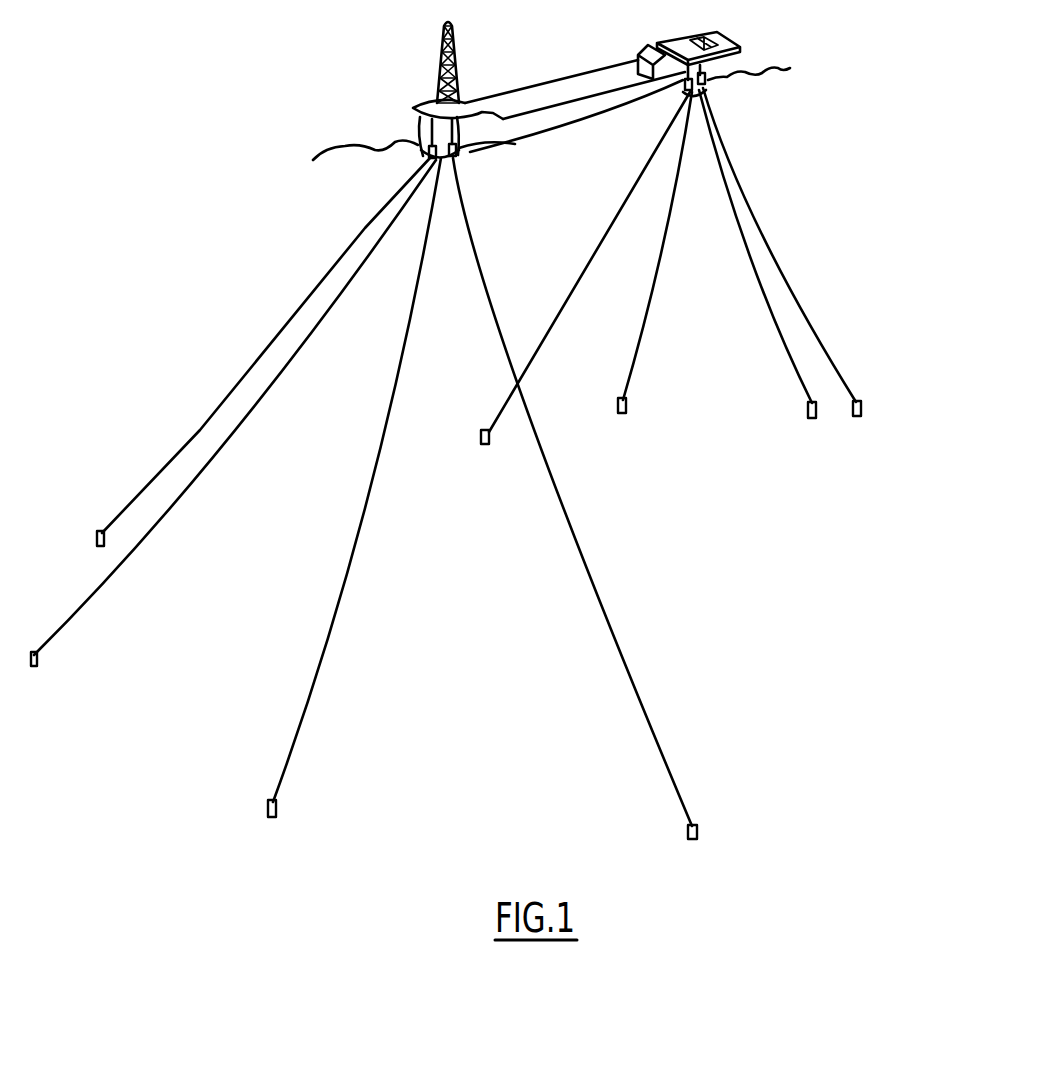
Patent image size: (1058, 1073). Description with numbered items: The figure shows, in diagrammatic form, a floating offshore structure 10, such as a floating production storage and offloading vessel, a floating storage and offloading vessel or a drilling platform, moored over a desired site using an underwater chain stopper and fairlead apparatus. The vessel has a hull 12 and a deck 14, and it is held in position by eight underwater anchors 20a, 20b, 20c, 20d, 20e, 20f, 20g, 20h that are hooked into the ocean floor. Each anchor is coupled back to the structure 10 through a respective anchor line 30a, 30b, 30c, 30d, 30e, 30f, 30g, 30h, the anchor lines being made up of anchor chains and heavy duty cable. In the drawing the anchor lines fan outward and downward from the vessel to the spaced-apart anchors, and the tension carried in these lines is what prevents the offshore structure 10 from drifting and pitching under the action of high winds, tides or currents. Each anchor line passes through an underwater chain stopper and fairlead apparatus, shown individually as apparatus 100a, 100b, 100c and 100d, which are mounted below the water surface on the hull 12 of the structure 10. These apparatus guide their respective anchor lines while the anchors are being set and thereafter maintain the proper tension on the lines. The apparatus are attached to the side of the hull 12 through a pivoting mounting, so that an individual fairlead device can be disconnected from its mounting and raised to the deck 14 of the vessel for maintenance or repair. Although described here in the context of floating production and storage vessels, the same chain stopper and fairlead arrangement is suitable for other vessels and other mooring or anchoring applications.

The floating offshore structure 10 is at (551, 93).
The hull 12 is at (563, 123).
The deck 14 is at (523, 102).
The underwater chain stopper and fairlead apparatus 100a is at (422, 148).
The underwater chain stopper and fairlead apparatus 100b is at (462, 150).
The underwater chain stopper and fairlead apparatus 100c is at (655, 112).
The underwater chain stopper and fairlead apparatus 100d is at (705, 84).
The underwater anchor 20a is at (96, 542).
The underwater anchor 20b is at (38, 662).
The underwater anchor 20c is at (280, 809).
The underwater anchor 20d is at (700, 831).
The underwater anchor 20e is at (480, 437).
The underwater anchor 20f is at (628, 403).
The underwater anchor 20g is at (813, 420).
The underwater anchor 20h is at (862, 414).
The anchor line 30a is at (228, 397).
The anchor line 30b is at (232, 445).
The anchor line 30c is at (352, 555).
The anchor line 30d is at (598, 595).
The anchor line 30e is at (592, 251).
The anchor line 30f is at (650, 317).
The anchor line 30g is at (767, 325).
The anchor line 30h is at (765, 262).